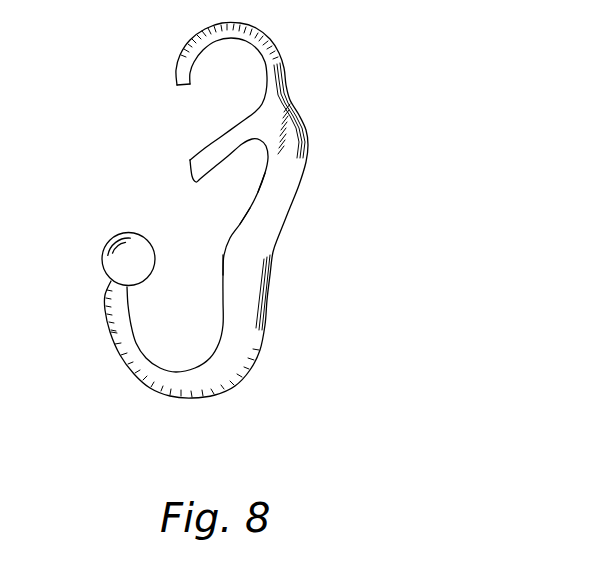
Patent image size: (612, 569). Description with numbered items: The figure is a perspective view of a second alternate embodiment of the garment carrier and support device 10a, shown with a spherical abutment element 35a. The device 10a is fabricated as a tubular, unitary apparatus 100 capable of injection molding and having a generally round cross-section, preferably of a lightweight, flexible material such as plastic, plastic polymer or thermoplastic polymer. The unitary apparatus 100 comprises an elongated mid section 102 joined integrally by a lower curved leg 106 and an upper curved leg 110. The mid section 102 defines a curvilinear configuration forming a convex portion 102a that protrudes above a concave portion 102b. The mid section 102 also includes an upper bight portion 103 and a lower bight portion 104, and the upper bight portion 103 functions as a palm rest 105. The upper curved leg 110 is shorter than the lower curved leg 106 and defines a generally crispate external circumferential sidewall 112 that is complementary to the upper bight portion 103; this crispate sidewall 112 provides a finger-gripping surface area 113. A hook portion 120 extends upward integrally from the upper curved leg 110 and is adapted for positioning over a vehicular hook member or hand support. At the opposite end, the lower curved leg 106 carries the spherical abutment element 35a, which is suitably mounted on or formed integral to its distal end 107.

The unitary apparatus 100 is at (342, 107).
The garment carrier and support device 10a is at (320, 67).
The hook portion 120 is at (176, 57).
The upper curved leg 110 is at (218, 133).
The upper bight portion 103 is at (308, 145).
The palm rest 105 is at (307, 166).
The crispate external circumferential sidewall 112 is at (258, 190).
The finger-gripping surface area 113 is at (242, 222).
The convex portion 102a is at (223, 258).
The concave portion 102b is at (274, 252).
The elongated mid section 102 is at (268, 278).
The lower bight portion 104 is at (267, 323).
The lower curved leg 106 is at (173, 398).
The distal end 107 is at (129, 284).
The spherical abutment element 35a is at (108, 243).